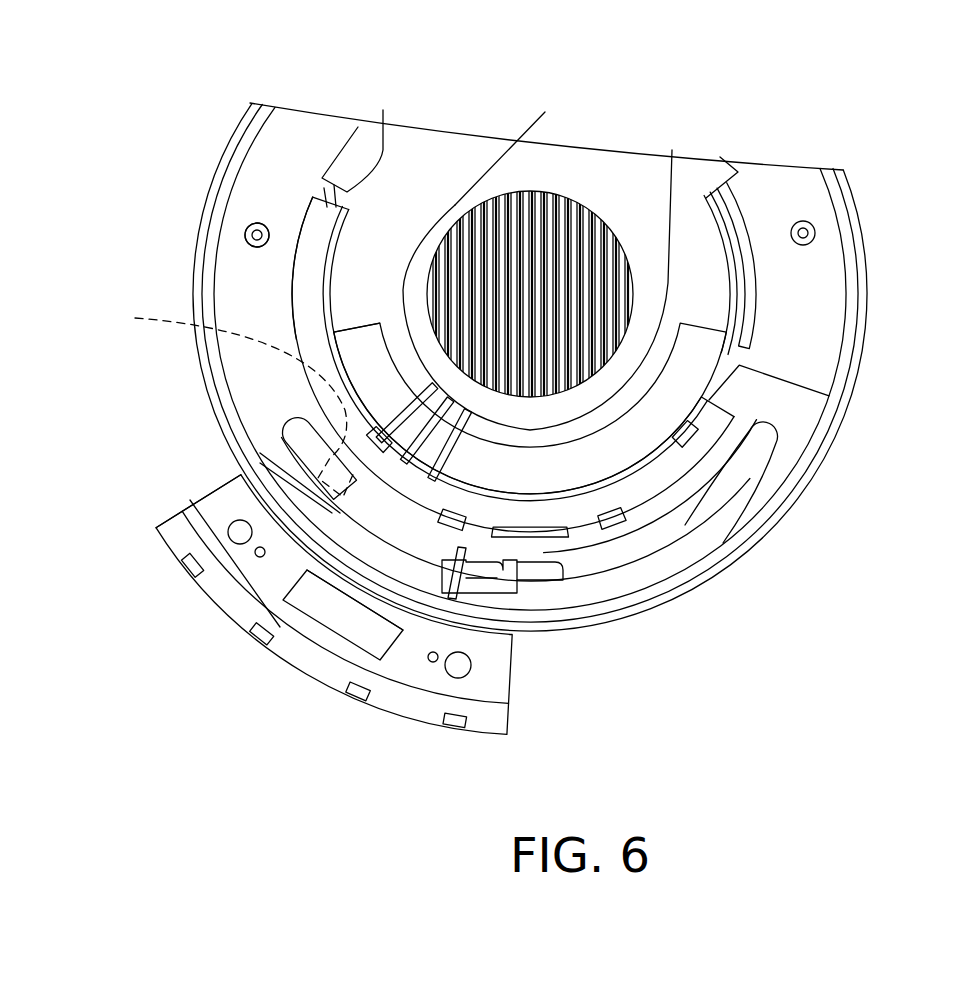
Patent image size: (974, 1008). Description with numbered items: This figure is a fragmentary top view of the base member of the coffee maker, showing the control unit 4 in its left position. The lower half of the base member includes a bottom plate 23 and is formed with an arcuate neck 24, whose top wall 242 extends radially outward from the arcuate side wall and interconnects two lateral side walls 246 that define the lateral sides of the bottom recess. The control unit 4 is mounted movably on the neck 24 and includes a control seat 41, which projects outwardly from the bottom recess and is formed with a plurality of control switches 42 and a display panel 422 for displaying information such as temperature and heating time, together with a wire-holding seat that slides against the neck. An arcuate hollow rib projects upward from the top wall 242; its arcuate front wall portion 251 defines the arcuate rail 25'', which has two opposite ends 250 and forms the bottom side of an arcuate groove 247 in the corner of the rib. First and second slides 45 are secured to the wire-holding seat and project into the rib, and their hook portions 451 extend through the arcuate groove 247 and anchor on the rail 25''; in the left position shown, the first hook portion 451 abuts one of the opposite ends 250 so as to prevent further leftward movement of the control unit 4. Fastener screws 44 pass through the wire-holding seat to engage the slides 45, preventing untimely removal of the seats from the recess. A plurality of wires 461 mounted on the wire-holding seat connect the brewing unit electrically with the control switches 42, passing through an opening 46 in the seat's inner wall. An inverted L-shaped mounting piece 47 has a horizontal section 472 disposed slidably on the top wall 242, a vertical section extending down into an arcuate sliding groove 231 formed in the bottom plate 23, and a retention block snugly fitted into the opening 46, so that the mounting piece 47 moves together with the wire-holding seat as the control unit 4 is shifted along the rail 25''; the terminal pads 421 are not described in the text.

The bottom plate 23 is at (458, 160).
The arcuate sliding groove 231 is at (383, 112).
The opening 46 is at (672, 150).
The wires 461 is at (545, 112).
The inverted L-shaped mounting piece 47 is at (305, 210).
The horizontal section 472 is at (313, 237).
The neck 24 is at (270, 455).
The lateral side walls 246 is at (275, 385).
The hook portions 451 is at (303, 440).
The slides 45 is at (121, 321).
The top wall 242 is at (800, 427).
The arcuate front wall portion 251 is at (717, 520).
The opposite ends 250 is at (297, 443).
The arcuate groove 247 is at (293, 437).
The arcuate rail 25'' is at (167, 513).
The fastener screws 44 is at (242, 607).
The control unit 4 is at (510, 722).
The control seat 41 is at (407, 703).
The terminal pad 421 is at (263, 645).
The control switches 42 is at (327, 610).
The display panel 422 is at (343, 625).